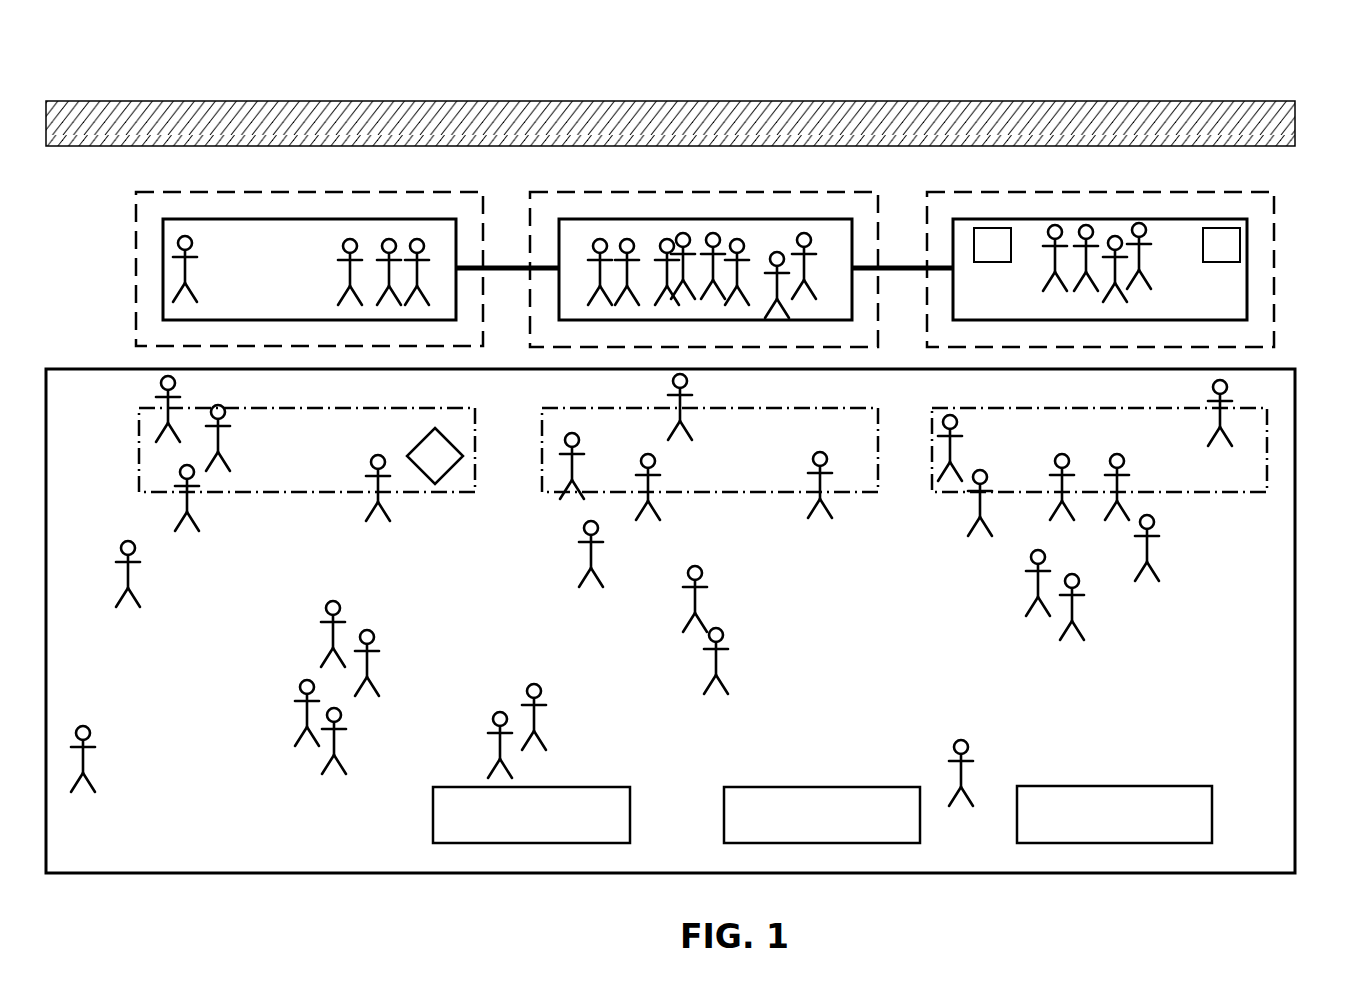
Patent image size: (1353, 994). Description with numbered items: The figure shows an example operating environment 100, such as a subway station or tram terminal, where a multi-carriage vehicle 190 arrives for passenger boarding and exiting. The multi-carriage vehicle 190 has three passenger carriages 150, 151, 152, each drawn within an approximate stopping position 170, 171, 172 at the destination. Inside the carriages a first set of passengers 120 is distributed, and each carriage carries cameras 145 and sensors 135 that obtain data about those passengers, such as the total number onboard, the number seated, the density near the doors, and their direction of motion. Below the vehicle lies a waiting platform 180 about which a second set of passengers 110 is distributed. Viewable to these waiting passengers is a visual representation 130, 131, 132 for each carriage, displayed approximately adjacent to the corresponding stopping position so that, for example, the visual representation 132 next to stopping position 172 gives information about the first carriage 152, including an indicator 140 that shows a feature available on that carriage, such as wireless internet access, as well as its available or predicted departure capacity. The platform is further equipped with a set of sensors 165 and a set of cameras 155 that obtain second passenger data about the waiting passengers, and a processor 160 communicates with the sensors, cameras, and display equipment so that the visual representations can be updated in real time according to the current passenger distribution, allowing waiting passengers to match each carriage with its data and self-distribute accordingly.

The operating environment 100 is at (208, 58).
The multi-carriage vehicle 190 is at (130, 169).
The waiting platform 180 is at (175, 873).
The approximate stopping position 172 is at (483, 327).
The approximate stopping position 171 is at (878, 327).
The approximate stopping position 170 is at (1274, 297).
The first carriage 152 is at (420, 219).
The passenger carriage 151 is at (770, 219).
The passenger carriage 150 is at (1165, 219).
The first set of passengers 120 is at (192, 262).
The sensors 135 is at (1003, 258).
The cameras 145 is at (1203, 262).
The indicator 140 is at (408, 445).
The visual representation 132 is at (305, 492).
The visual representation 131 is at (735, 492).
The visual representation 130 is at (1168, 492).
The second set of passengers 110 is at (90, 756).
The sensors 165 is at (588, 787).
The cameras 155 is at (820, 787).
The processor 160 is at (1132, 786).